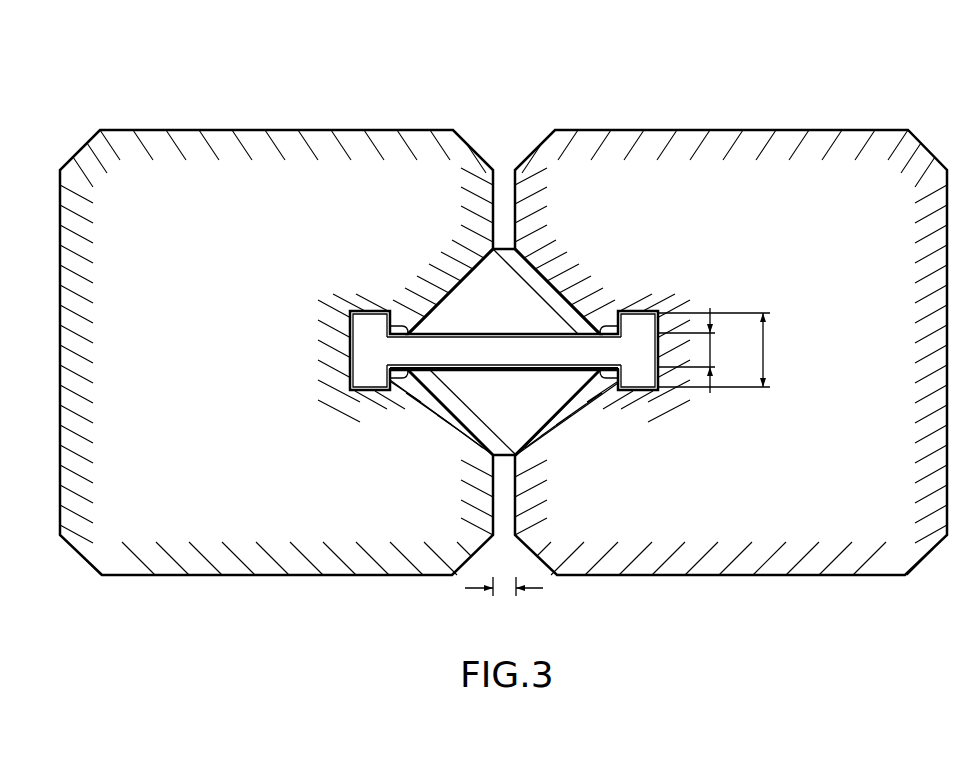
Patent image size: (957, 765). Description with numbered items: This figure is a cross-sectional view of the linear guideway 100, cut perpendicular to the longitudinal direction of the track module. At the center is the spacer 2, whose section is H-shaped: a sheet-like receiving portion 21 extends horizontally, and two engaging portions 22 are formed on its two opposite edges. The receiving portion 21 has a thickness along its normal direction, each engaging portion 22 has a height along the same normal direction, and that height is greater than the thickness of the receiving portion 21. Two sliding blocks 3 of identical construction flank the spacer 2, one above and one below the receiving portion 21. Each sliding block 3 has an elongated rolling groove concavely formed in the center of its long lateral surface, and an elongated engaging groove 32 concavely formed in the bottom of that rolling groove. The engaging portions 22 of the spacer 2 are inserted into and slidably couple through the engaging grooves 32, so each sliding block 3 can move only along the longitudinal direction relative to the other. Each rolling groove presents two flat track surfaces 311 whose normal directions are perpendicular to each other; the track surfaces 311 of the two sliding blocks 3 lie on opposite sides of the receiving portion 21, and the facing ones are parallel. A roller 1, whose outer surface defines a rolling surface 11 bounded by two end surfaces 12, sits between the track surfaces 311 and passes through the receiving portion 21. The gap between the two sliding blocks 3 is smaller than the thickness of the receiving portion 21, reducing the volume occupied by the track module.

The linear guideway 100 is at (90, 64).
The sliding block 3 is at (315, 130).
The track surface 311 is at (558, 303).
The engaging groove 32 is at (347, 343).
The roller 1 is at (435, 186).
The rolling surface 11 is at (438, 296).
The end surface 12 is at (542, 268).
The spacer 2 is at (440, 462).
The receiving portion 21 is at (464, 350).
The engaging portion 22 is at (372, 378).